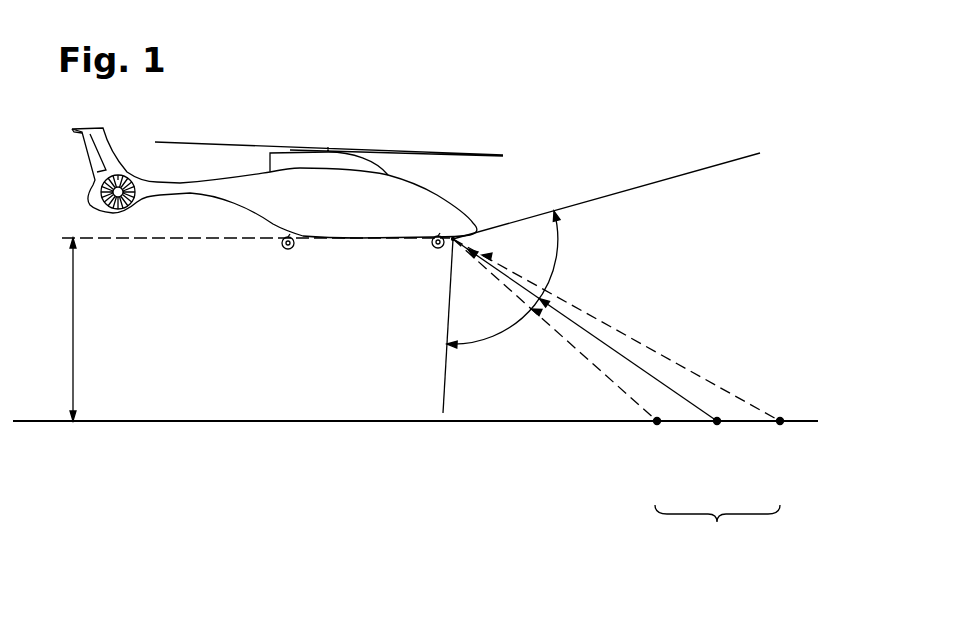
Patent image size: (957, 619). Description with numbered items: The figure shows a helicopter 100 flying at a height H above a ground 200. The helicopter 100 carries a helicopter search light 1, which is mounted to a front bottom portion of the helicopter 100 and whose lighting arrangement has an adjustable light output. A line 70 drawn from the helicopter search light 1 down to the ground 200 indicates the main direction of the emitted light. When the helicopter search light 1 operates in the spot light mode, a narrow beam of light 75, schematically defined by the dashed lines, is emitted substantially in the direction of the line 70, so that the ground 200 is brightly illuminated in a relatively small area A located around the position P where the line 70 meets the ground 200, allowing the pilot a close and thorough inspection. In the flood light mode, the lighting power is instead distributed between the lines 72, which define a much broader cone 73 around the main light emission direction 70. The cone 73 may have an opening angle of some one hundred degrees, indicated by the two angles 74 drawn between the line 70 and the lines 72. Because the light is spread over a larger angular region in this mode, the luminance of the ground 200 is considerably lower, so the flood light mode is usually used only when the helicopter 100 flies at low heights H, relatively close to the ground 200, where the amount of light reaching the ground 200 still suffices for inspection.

The helicopter search light 1 is at (450, 242).
The line indicating main light emission direction 70 is at (632, 357).
The lines defining the cone 72 is at (660, 181).
The cone 73 is at (585, 175).
The angles 74 is at (556, 258).
The narrow beam of light 75 is at (730, 363).
The helicopter 100 is at (315, 278).
The ground 200 is at (247, 424).
The height H is at (73, 328).
The position P is at (717, 426).
The area A is at (717, 530).